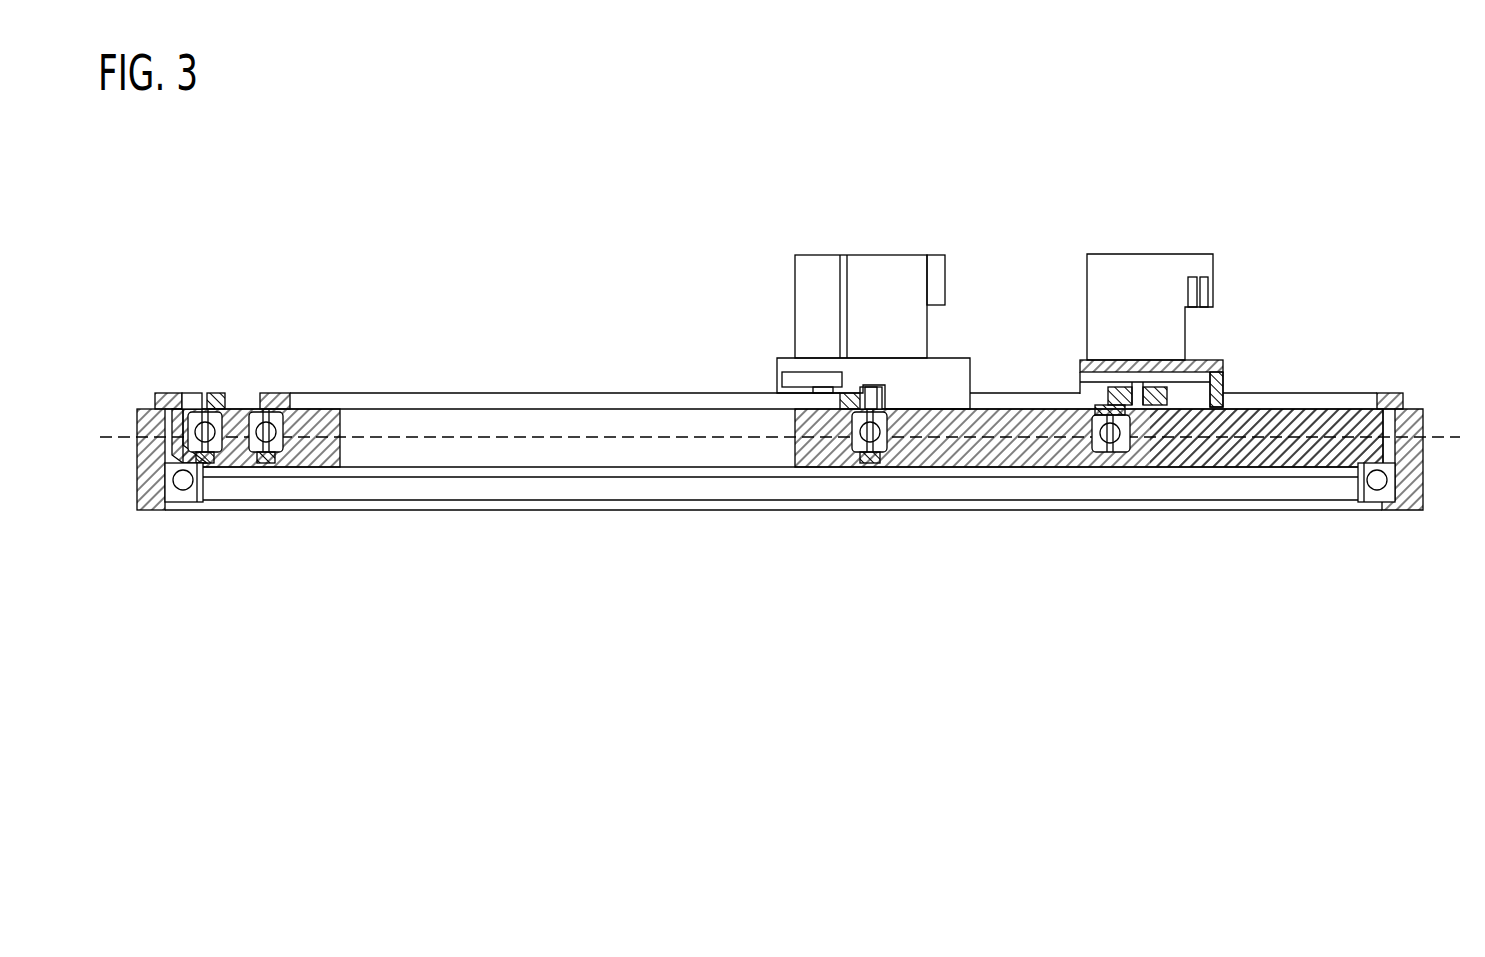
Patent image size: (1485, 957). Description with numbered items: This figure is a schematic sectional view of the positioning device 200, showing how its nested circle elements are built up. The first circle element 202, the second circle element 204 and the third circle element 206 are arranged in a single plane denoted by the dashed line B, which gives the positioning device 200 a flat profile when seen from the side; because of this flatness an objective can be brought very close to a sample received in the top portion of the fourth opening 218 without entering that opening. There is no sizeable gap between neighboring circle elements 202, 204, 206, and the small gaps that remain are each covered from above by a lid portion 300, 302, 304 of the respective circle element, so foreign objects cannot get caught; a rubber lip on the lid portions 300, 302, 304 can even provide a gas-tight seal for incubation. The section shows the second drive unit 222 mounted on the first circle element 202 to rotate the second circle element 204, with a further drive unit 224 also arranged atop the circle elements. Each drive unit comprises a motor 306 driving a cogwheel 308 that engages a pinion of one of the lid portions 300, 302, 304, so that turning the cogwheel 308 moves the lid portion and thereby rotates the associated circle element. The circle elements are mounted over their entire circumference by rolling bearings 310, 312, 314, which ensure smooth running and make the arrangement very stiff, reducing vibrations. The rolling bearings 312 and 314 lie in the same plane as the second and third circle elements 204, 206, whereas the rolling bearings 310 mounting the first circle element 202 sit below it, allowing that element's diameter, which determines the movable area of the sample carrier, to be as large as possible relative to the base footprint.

The positioning device 200 is at (558, 196).
The first circle element 202 is at (1285, 411).
The second circle element 204 is at (975, 458).
The third circle element 206 is at (330, 411).
The fourth opening 218 is at (535, 410).
The second drive unit 222 is at (1149, 244).
The third drive unit 224 is at (882, 244).
The lid portion 300 is at (170, 395).
The lid portion 302 is at (212, 397).
The lid portion 304 is at (282, 396).
The motor 306 is at (1105, 263).
The cogwheel 308 is at (1163, 395).
The rolling bearings 310 is at (172, 495).
The rolling bearings 312 is at (218, 457).
The rolling bearings 314 is at (278, 456).
The dashed line B is at (1450, 436).